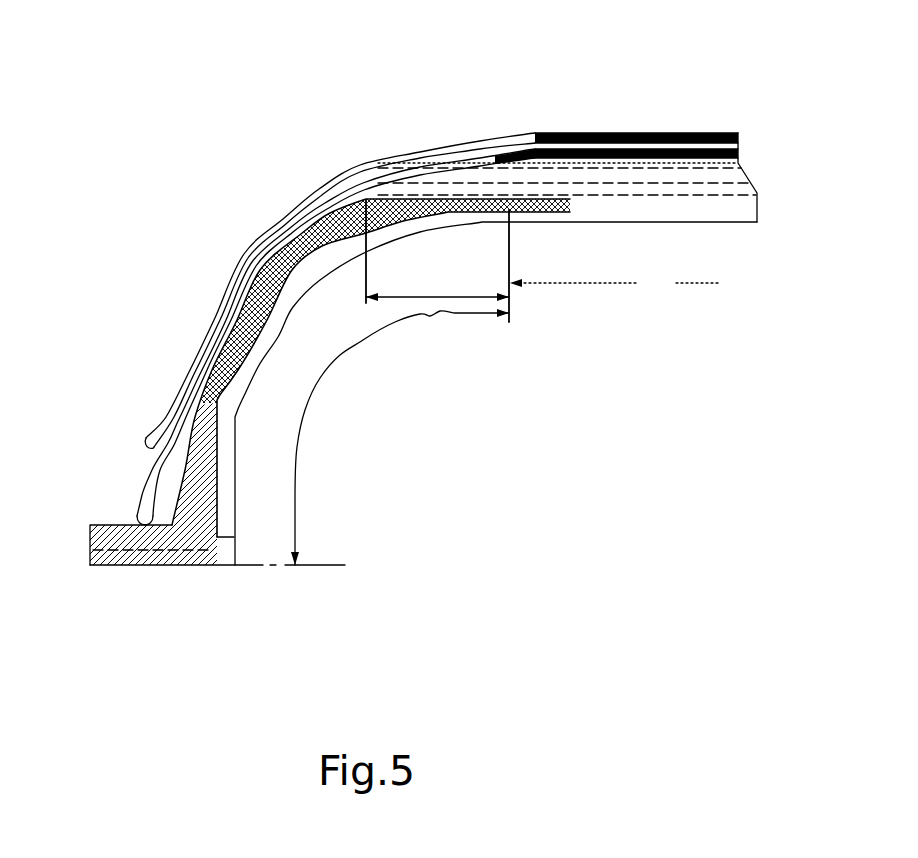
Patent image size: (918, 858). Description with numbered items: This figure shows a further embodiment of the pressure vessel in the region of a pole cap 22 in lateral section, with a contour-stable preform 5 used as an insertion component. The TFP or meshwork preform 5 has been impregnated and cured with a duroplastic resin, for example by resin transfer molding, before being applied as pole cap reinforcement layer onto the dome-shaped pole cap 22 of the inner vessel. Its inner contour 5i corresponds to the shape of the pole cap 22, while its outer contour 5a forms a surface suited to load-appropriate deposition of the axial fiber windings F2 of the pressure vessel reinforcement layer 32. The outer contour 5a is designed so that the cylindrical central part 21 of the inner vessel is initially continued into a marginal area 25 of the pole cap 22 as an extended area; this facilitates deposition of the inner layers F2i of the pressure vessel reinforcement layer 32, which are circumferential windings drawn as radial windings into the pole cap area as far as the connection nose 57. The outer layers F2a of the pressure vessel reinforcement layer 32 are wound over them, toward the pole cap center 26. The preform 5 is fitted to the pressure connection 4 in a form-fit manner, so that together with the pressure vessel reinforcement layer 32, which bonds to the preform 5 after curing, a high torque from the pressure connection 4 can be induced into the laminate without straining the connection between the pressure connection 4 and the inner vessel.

The pressure connection 4 is at (112, 523).
The contour-stable preform 5 is at (464, 283).
The outer contour of the preform 5a is at (273, 260).
The inner contour of the preform 5i is at (302, 282).
The connection nose 57 is at (338, 213).
The pressure vessel reinforcement layer 32 is at (410, 279).
The fiber material of the pressure vessel reinforcement layer F2 is at (237, 300).
The outer layers of the pressure vessel reinforcement layer F2a is at (604, 152).
The inner layers of the pressure vessel reinforcement layer F2i is at (667, 184).
The cylindrical central part of the inner vessel 21 is at (614, 283).
The pole cap 22 is at (333, 402).
The marginal area of the pole cap 25 is at (435, 267).
The pole cap center 26 is at (224, 493).